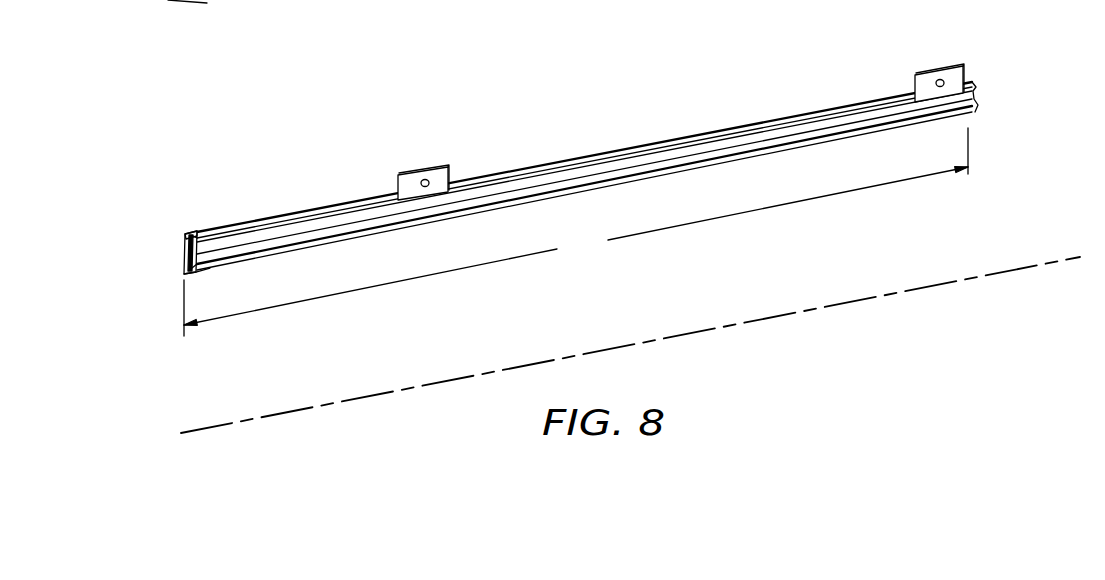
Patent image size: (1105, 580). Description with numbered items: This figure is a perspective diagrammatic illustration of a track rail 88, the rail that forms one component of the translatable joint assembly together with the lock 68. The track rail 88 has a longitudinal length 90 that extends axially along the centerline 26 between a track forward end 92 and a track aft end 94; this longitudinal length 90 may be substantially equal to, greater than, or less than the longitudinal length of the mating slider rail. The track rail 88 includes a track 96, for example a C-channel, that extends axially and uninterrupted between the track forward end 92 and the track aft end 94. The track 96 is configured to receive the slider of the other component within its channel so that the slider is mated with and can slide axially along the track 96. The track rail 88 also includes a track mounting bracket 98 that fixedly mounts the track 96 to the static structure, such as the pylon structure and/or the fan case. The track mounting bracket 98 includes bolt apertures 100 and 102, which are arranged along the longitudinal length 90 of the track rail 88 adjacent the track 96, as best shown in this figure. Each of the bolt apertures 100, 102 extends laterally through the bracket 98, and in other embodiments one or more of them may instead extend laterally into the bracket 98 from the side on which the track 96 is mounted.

The centerline 26 is at (1060, 257).
The lock 68 is at (577, 156).
The track rail 88 is at (577, 156).
The longitudinal length 90 is at (576, 232).
The track forward end 92 is at (187, 252).
The track aft end 94 is at (965, 90).
The track 96 is at (208, 267).
The track mounting bracket 98 is at (196, 232).
The bolt aperture 100 is at (940, 80).
The bolt aperture 102 is at (425, 180).